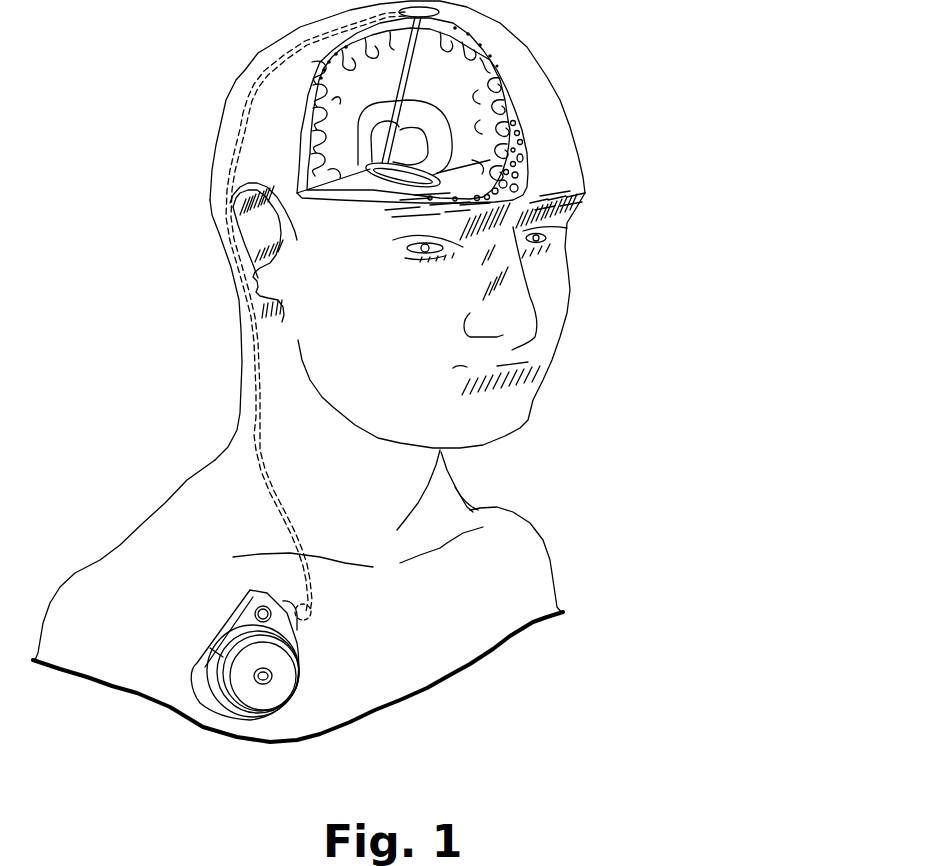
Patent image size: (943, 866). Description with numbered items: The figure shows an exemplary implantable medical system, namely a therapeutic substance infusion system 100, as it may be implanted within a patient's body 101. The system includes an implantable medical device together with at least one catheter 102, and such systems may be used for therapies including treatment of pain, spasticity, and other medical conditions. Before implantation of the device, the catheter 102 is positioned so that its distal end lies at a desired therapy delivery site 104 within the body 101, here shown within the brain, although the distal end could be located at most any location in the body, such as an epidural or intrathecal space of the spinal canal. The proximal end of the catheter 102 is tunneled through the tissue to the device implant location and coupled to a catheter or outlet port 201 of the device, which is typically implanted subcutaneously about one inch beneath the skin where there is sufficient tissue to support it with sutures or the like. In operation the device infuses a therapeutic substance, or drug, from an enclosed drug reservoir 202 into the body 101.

The therapeutic substance infusion system 100 is at (295, 686).
The patient's body 101 is at (550, 550).
The catheter 102 is at (257, 367).
The therapy delivery site 104 is at (405, 152).
The outlet port 201 is at (295, 605).
The drug reservoir 202 is at (270, 683).